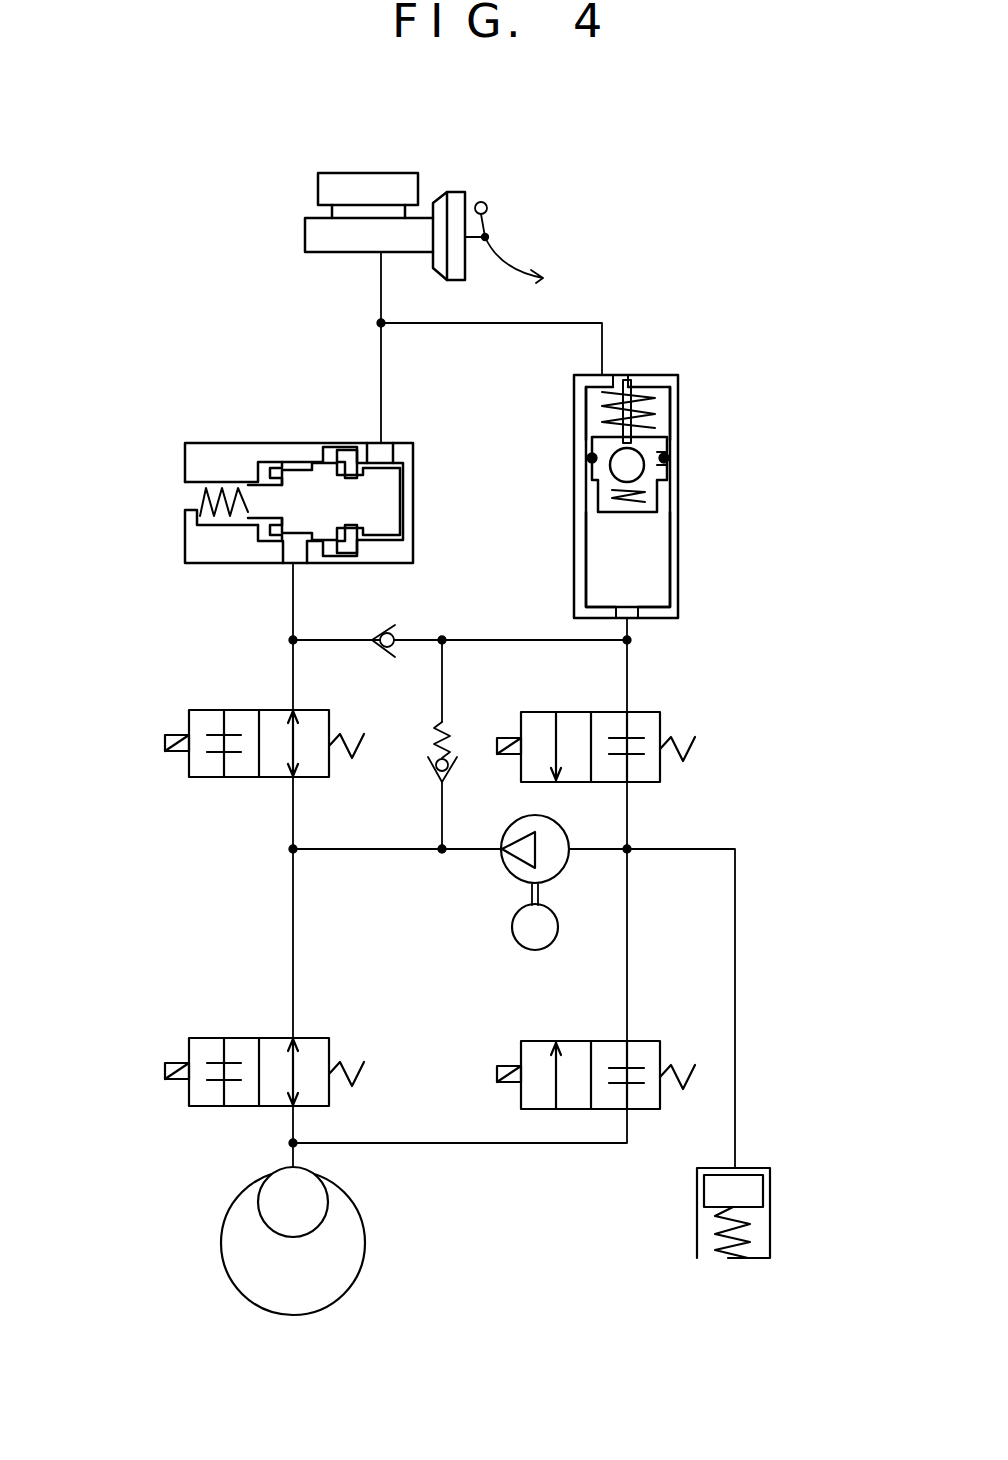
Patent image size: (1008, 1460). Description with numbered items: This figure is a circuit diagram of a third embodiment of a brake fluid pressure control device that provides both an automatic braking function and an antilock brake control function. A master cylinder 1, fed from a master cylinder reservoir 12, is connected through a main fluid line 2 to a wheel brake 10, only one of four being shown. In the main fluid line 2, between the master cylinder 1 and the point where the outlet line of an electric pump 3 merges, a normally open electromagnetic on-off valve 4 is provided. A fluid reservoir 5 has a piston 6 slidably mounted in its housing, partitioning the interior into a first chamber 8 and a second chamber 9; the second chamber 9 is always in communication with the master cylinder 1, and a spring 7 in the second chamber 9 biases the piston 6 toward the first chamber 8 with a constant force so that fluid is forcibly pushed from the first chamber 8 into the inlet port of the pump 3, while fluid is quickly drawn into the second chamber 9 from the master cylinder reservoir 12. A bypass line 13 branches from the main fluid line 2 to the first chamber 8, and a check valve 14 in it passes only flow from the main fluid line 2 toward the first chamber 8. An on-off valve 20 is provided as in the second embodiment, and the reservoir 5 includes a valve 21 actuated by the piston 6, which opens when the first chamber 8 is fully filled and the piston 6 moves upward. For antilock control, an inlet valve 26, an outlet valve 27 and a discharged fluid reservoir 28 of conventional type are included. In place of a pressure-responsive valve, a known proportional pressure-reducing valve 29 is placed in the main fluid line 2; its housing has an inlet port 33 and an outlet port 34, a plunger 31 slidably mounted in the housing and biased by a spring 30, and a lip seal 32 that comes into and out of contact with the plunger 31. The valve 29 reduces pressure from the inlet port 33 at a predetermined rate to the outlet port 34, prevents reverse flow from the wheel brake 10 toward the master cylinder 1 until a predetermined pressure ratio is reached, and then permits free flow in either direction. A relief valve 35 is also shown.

The master cylinder 1 is at (318, 243).
The main fluid line 2 is at (381, 360).
The electric pump 3 is at (560, 877).
The normally open electromagnetic on-off valve 4 is at (190, 712).
The fluid reservoir 5 is at (703, 530).
The piston 6 is at (590, 470).
The spring 7 is at (645, 386).
The first chamber 8 is at (663, 585).
The second chamber 9 is at (655, 408).
The wheel brake 10 is at (310, 1200).
The master cylinder reservoir 12 is at (350, 188).
The bypass line 13 is at (337, 640).
The check valve 14 is at (384, 655).
The on-off valve 20 is at (660, 718).
The valve 21 is at (663, 475).
The inlet valve 26 is at (190, 1106).
The outlet valve 27 is at (643, 1112).
The discharged fluid reservoir 28 is at (770, 1238).
The proportional pressure-reducing valve 29 is at (163, 554).
The spring 30 is at (185, 498).
The plunger 31 is at (266, 500).
The lip seal 32 is at (345, 452).
The inlet port 33 is at (290, 565).
The outlet port 34 is at (395, 452).
The relief valve 35 is at (432, 770).